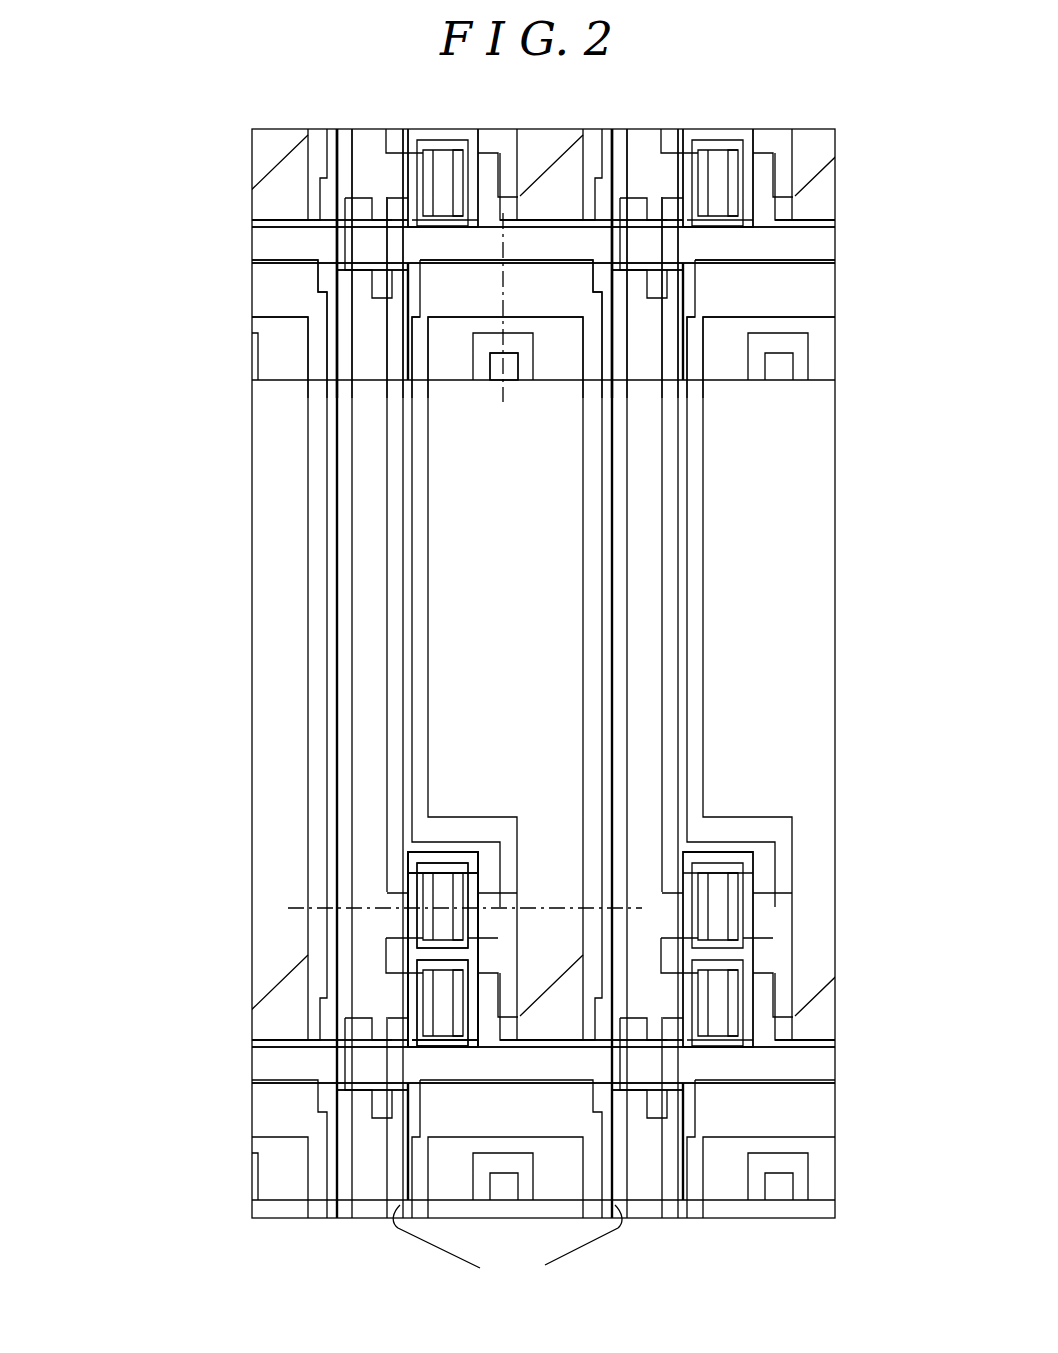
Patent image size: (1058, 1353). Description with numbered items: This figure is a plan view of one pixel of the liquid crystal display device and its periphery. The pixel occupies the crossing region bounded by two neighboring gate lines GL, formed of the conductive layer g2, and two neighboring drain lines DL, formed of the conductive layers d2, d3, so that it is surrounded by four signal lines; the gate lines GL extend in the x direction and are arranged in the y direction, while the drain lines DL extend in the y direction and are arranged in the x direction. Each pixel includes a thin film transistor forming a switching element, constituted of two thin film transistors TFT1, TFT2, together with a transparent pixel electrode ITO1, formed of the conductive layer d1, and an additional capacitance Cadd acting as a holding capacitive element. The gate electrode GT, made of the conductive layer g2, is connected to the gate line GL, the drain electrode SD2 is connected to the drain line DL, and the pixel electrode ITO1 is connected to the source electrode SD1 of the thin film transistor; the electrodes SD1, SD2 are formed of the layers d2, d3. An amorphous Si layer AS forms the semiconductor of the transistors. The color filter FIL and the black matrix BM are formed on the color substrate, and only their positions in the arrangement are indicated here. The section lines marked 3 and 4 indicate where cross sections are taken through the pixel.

The gate line GL is at (378, 266).
The conductive layer g2 is at (793, 358).
The drain line DL is at (352, 668).
The black matrix BM is at (583, 657).
The transparent pixel electrode ITO1 is at (505, 609).
The conductive layer d1 is at (414, 580).
The conductive layer d2 is at (491, 407).
The conductive layer d3 is at (474, 358).
The additional capacitance Cadd is at (568, 294).
The gate electrode GT is at (447, 852).
The amorphous Si layer AS is at (365, 1016).
The source electrode SD1 is at (436, 998).
The drain electrode SD2 is at (456, 1032).
The thin film transistor TFT1 is at (492, 849).
The thin film transistor TFT2 is at (493, 988).
The section line III-III 3 is at (648, 885).
The section line IV-IV 4 is at (494, 408).
The color filter FIL is at (507, 1246).